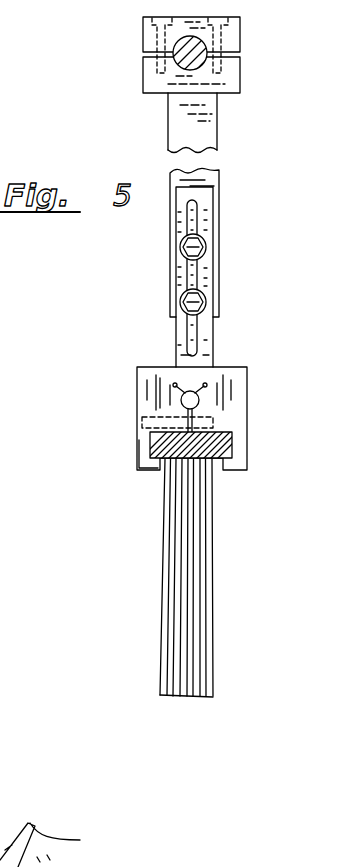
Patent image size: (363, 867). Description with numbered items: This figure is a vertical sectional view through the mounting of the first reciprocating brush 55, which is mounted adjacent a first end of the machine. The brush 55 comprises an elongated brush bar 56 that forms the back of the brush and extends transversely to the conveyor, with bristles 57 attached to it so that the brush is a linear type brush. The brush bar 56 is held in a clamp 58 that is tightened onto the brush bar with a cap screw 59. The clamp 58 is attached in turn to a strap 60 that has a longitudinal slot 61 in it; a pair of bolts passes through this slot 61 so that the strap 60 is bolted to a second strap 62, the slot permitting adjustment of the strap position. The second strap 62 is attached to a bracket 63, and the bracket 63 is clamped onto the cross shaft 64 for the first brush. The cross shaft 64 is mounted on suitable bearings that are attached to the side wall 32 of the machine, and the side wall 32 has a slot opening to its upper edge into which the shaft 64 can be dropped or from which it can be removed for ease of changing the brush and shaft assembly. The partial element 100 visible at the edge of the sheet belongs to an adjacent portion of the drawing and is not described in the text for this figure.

The cross shaft 64 is at (201, 47).
The bracket 63 is at (155, 82).
The second strap 62 is at (212, 185).
The longitudinal slot 61 is at (193, 333).
The strap 60 is at (207, 357).
The first reciprocating brush 55 is at (305, 397).
The cap screw 59 is at (157, 418).
The clamp 58 is at (142, 450).
The brush bar 56 is at (217, 442).
The bristles 57 is at (200, 566).
The side wall 32 is at (0, 524).
The unit 100 is at (40, 844).